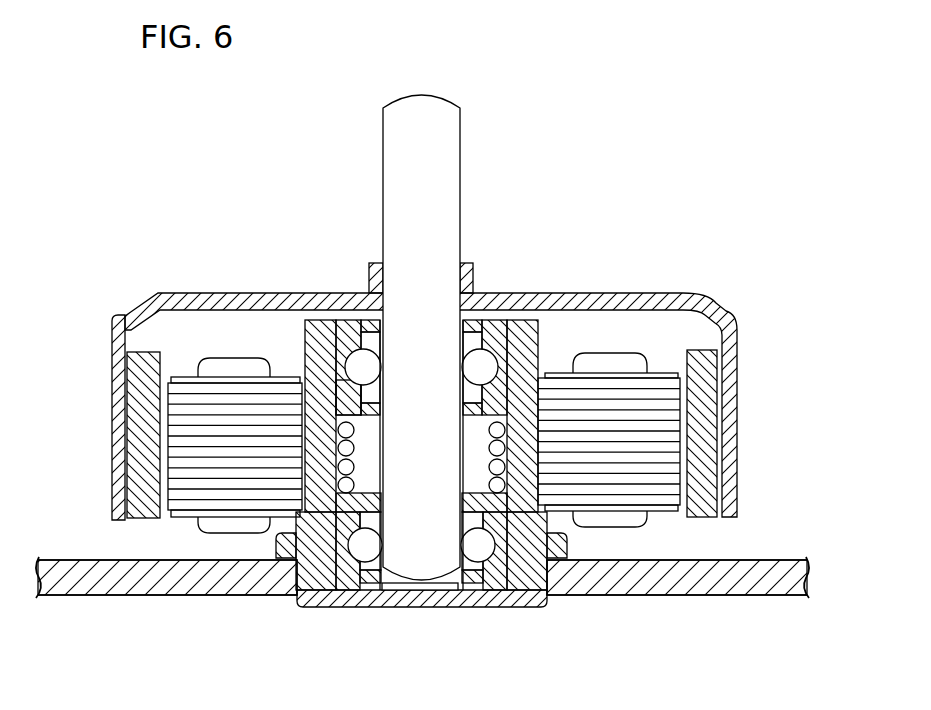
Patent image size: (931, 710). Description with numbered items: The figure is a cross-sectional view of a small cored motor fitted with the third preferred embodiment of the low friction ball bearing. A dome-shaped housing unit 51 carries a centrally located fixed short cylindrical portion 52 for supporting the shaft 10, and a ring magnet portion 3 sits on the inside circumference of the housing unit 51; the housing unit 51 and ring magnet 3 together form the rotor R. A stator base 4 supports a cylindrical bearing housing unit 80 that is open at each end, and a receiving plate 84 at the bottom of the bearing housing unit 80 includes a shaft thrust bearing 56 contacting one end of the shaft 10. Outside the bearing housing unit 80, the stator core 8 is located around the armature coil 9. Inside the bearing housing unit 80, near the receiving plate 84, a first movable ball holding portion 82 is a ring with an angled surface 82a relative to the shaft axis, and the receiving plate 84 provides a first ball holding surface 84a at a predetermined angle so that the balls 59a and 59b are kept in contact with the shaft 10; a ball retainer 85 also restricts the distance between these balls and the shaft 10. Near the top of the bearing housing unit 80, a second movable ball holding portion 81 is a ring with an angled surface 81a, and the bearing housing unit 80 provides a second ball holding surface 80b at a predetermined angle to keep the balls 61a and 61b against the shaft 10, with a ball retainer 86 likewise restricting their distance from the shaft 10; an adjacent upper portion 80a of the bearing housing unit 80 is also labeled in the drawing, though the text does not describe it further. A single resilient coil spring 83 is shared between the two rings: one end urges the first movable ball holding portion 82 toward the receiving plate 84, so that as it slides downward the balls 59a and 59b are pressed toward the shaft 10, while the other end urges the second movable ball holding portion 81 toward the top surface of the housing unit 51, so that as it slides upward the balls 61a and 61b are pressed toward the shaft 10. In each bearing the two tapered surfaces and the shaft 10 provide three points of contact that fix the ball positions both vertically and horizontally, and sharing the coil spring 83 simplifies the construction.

The ring magnet portion 3 is at (140, 402).
The stator base 4 is at (757, 580).
The stator core 8 is at (183, 405).
The armature coil 9 is at (230, 365).
The shaft 10 is at (427, 127).
The housing unit 51 is at (677, 291).
The fixed short cylindrical portion 52 is at (470, 280).
The shaft thrust bearing 56 is at (390, 583).
The ball 59a is at (478, 555).
The ball 59b is at (355, 548).
The ball 61a is at (483, 363).
The ball 61b is at (355, 360).
The cylindrical bearing housing unit 80 is at (530, 540).
The outer race 80a is at (475, 323).
The second ball holding surface 80b is at (500, 357).
The second movable ball holding portion 81 is at (342, 405).
The angled surface 81a is at (338, 393).
The first movable ball holding portion 82 is at (500, 537).
The angled surface 82a is at (503, 528).
The coil spring 83 is at (505, 447).
The receiving plate 84 is at (418, 600).
The first ball holding surface 84a is at (347, 572).
The ball retainer 85 is at (370, 575).
The ball retainer 86 is at (370, 345).
The rotor R is at (748, 302).